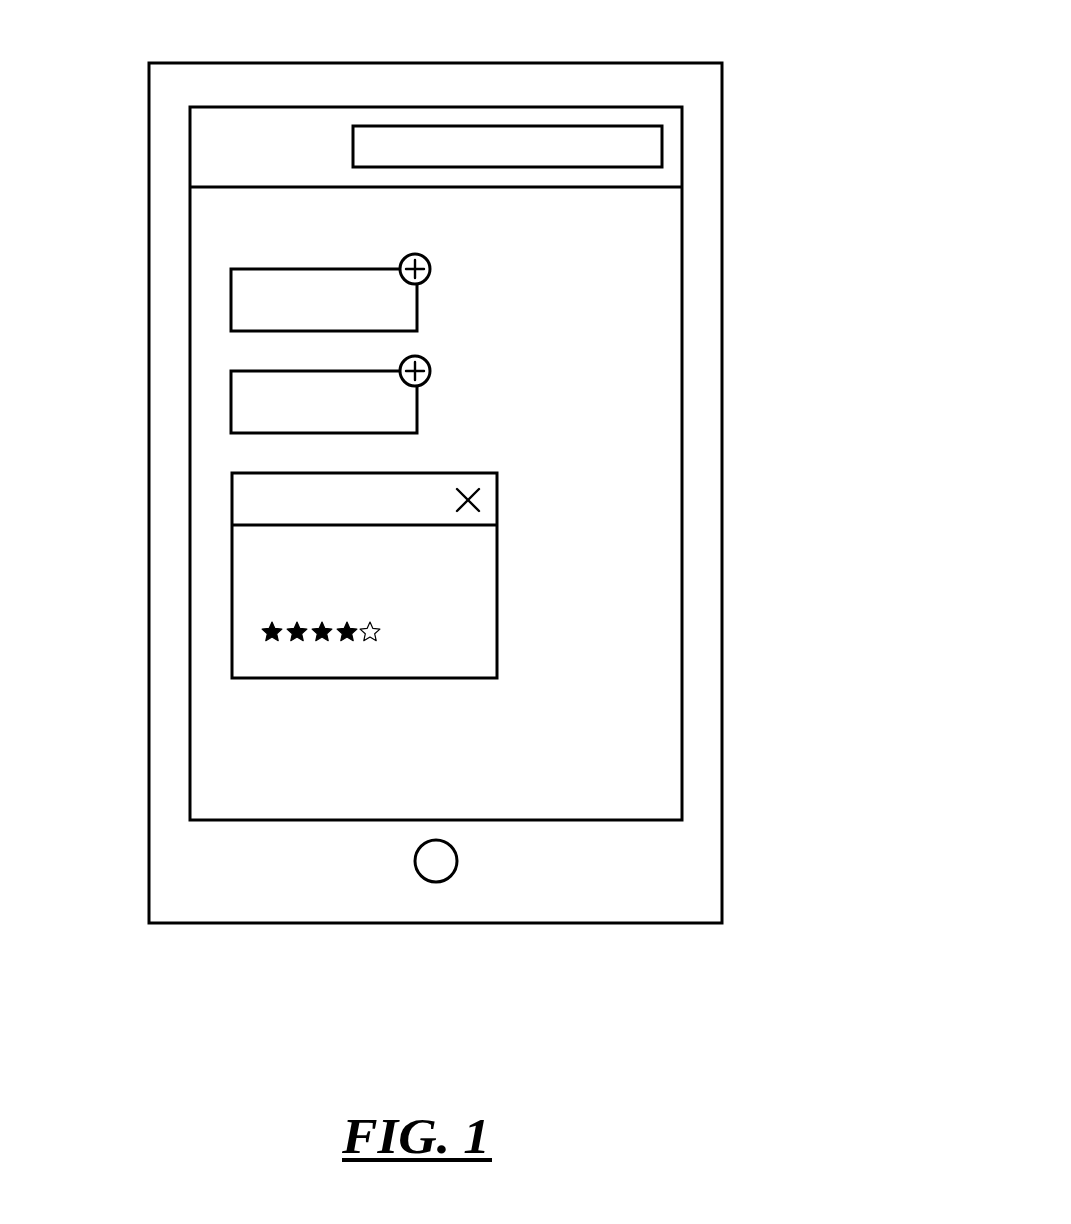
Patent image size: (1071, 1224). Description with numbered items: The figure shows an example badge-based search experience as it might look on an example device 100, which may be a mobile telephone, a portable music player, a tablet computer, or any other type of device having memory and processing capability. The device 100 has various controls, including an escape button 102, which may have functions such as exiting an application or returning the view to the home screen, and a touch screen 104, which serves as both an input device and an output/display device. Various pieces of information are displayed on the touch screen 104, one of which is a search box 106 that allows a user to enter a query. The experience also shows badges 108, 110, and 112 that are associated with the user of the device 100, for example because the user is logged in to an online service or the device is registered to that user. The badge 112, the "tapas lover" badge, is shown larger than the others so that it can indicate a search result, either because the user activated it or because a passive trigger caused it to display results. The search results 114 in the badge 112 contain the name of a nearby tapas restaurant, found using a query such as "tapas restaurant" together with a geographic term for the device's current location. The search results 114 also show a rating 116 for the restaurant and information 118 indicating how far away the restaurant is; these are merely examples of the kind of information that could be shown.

The device 100 is at (661, 62).
The escape button 102 is at (438, 882).
The touch screen 104 is at (683, 380).
The search box 106 is at (662, 145).
The badge 108 is at (231, 289).
The badge 110 is at (231, 391).
The badge 112 is at (232, 502).
The search results 114 is at (477, 545).
The rating 116 is at (405, 627).
The information 118 is at (252, 597).